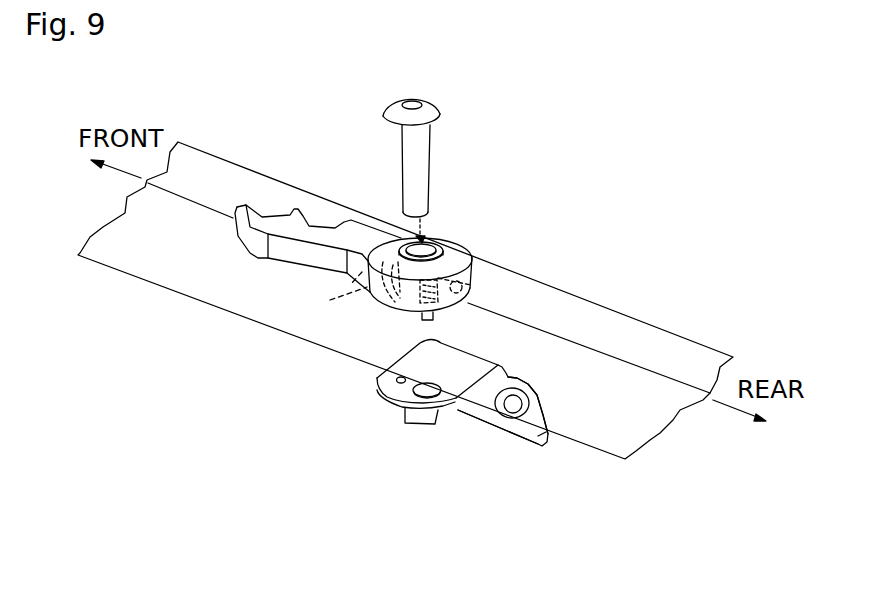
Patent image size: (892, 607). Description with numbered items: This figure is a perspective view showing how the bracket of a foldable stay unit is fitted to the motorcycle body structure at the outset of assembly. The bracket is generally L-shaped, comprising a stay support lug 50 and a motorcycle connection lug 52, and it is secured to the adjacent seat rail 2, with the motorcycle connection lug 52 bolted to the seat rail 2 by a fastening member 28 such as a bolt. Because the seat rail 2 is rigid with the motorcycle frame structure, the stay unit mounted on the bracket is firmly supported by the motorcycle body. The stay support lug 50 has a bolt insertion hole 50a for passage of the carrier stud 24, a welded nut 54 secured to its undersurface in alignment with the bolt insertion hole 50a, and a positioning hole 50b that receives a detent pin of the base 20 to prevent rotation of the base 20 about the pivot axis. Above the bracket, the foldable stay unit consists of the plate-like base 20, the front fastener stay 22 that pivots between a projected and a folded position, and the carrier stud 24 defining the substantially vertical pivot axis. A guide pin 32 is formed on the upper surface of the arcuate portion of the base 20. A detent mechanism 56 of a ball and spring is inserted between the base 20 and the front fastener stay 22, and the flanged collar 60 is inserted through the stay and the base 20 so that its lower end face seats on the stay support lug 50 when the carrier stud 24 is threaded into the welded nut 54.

The seat rail 2 is at (678, 347).
The base 20 is at (468, 320).
The front fastener stay 22 is at (448, 238).
The carrier stud 24 is at (423, 148).
The fastening member 28 is at (513, 407).
The guide pin 32 is at (350, 285).
The stay support lug 50 is at (465, 380).
The bolt insertion hole 50a is at (402, 389).
The positioning hole 50b is at (378, 386).
The motorcycle connection lug 52 is at (517, 433).
The welded nut 54 is at (420, 420).
The detent mechanism 56 is at (413, 301).
The flanged collar 60 is at (447, 243).